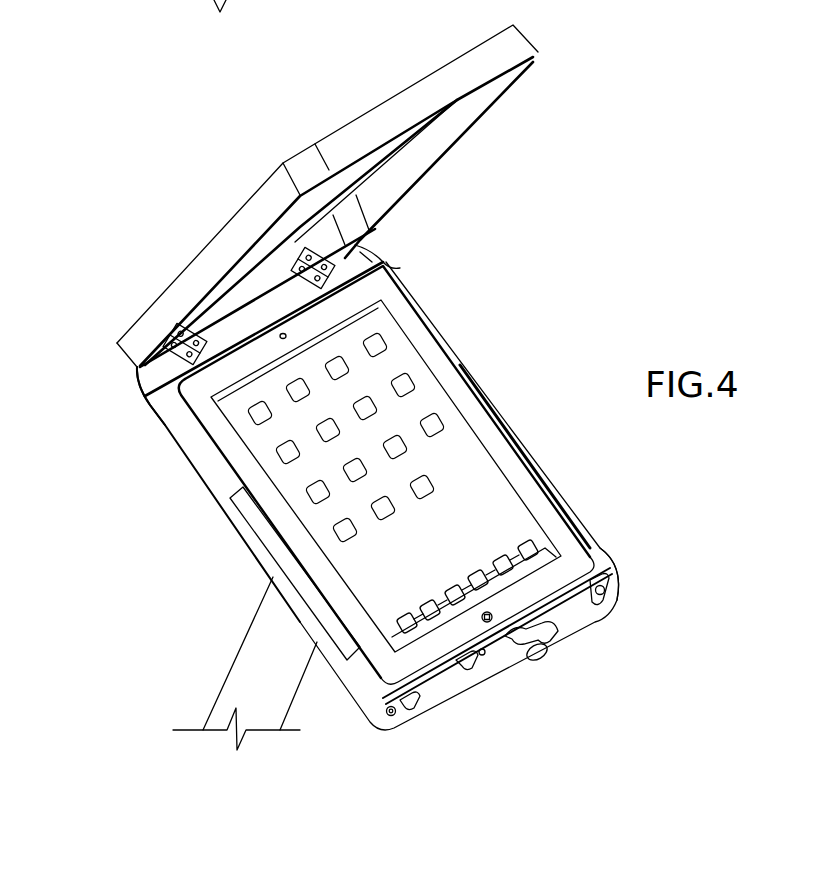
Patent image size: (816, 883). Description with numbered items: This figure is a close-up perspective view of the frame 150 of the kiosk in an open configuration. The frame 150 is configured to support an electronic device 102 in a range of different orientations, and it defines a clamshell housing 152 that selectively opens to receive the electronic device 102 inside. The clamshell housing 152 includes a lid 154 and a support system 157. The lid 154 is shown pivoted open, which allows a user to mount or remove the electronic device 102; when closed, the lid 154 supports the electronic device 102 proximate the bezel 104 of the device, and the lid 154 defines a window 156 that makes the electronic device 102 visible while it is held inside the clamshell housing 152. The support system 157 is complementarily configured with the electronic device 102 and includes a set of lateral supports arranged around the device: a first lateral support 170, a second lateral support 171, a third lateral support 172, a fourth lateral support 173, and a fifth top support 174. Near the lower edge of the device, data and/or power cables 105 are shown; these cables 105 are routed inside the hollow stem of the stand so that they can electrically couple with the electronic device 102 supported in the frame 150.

The electronic device 102 is at (410, 317).
The bezel 104 is at (437, 350).
The power cables 105 is at (540, 665).
The frame 150 is at (60, 276).
The clamshell housing 152 is at (88, 350).
The lid 154 is at (518, 44).
The window 156 is at (377, 163).
The support system 157 is at (612, 532).
The first lateral support 170 is at (600, 568).
The second lateral support 171 is at (258, 526).
The third lateral support 172 is at (490, 398).
The fourth lateral support 173 is at (153, 410).
The fifth top support 174 is at (378, 258).